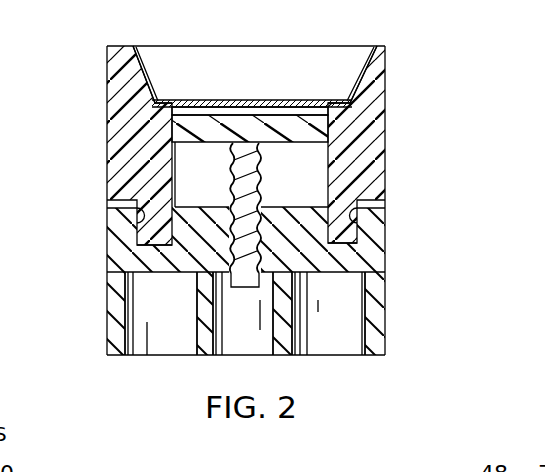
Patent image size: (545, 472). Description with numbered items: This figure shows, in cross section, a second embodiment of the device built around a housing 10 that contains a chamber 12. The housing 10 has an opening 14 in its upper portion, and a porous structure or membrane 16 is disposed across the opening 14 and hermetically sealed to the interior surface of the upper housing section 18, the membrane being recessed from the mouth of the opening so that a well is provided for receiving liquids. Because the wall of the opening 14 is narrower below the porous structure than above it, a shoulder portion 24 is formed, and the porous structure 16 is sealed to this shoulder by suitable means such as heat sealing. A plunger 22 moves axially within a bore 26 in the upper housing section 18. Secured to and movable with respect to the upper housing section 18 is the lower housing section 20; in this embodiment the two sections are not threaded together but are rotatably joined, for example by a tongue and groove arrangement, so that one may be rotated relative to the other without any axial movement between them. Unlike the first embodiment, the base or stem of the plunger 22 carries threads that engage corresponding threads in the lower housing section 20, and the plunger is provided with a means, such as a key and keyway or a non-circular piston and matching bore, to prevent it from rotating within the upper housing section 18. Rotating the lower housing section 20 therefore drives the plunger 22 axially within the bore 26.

The housing 10 is at (408, 235).
The chamber 12 is at (330, 85).
The opening 14 is at (147, 63).
The porous structure or membrane 16 is at (247, 100).
The upper housing section 18 is at (370, 137).
The lower housing section 20 is at (385, 267).
The plunger 22 is at (322, 126).
The shoulder portion 24 is at (156, 106).
The bore 26 is at (343, 107).